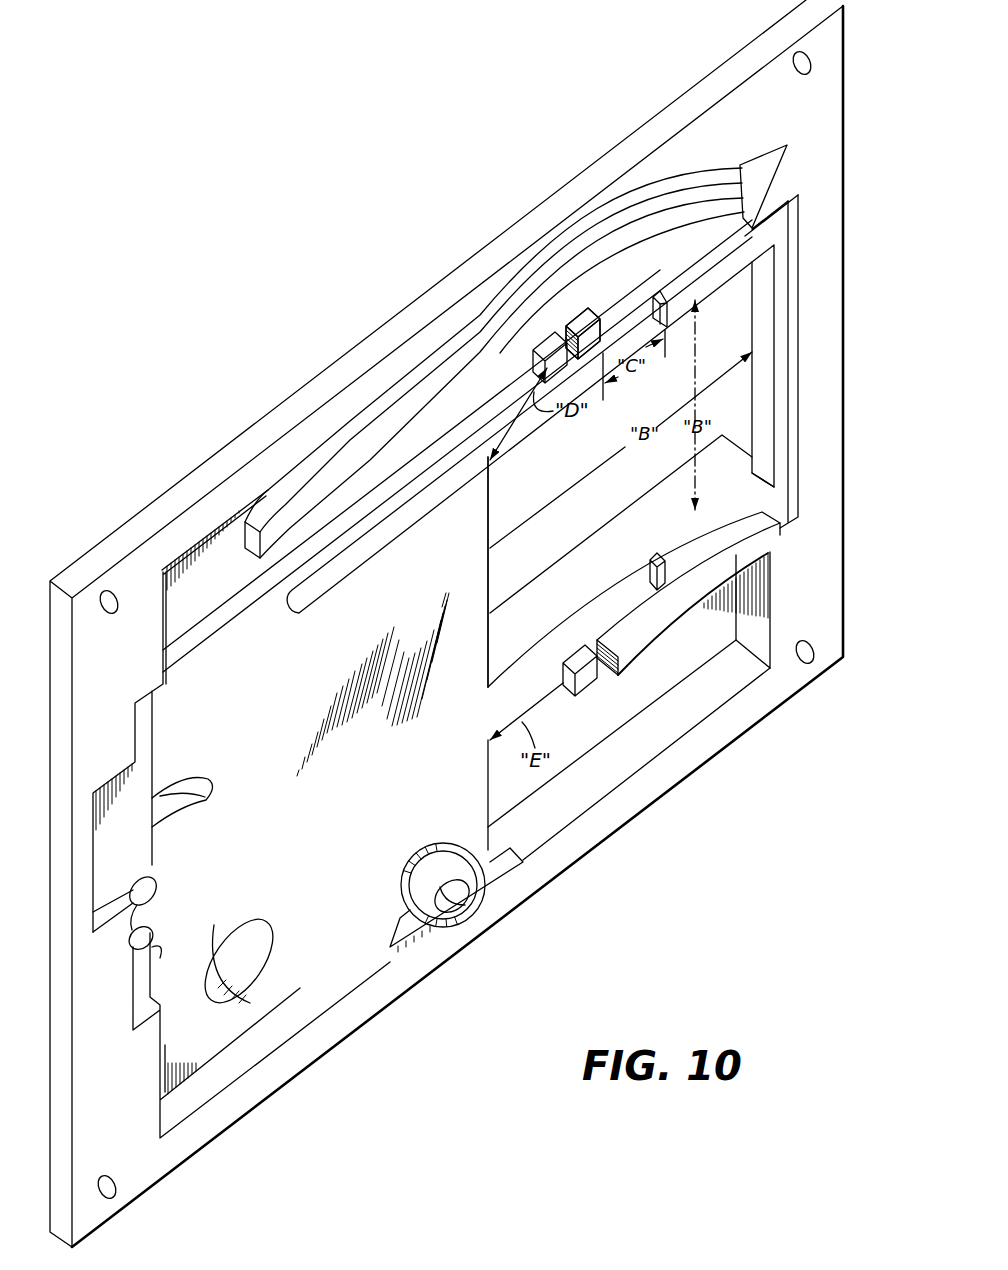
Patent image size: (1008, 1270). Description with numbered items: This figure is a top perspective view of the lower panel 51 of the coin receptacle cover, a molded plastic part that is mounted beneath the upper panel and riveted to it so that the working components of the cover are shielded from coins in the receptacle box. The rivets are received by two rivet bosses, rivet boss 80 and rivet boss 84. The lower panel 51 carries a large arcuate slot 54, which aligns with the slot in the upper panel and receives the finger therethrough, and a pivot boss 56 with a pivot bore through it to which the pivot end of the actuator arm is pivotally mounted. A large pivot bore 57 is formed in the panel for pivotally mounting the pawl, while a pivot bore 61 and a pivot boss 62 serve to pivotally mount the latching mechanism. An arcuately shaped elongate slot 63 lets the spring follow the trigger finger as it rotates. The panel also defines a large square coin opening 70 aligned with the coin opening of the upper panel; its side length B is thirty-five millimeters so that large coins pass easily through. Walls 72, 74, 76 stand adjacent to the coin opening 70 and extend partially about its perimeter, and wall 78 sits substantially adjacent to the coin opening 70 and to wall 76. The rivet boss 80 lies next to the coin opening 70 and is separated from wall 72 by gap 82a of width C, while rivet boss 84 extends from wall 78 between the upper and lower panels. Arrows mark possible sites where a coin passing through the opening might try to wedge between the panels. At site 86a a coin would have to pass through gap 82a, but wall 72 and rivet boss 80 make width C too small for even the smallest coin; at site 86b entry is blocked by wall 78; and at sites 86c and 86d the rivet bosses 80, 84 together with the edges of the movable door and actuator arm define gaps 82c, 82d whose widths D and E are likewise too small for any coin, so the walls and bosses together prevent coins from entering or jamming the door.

The lower panel 51 is at (578, 898).
The large arcuate slot 54 is at (592, 250).
The pivot boss 56 is at (465, 855).
The large pivot bore 57 is at (273, 943).
The pivot bore 61 is at (158, 895).
The pivot boss 62 is at (150, 942).
The elongate slot 63 is at (195, 797).
The coin opening 70 is at (723, 336).
The wall 72 is at (722, 268).
The wall 74 is at (757, 378).
The wall 76 is at (721, 531).
The wall 78 is at (647, 617).
The rivet boss 80 is at (556, 325).
The gap 82a is at (628, 300).
The site 86a is at (583, 333).
The gap 82c is at (503, 412).
The site 86c is at (514, 432).
The gap 82d is at (550, 687).
The site 86d is at (530, 697).
The site 86b is at (614, 605).
The rivet boss 84 is at (574, 704).